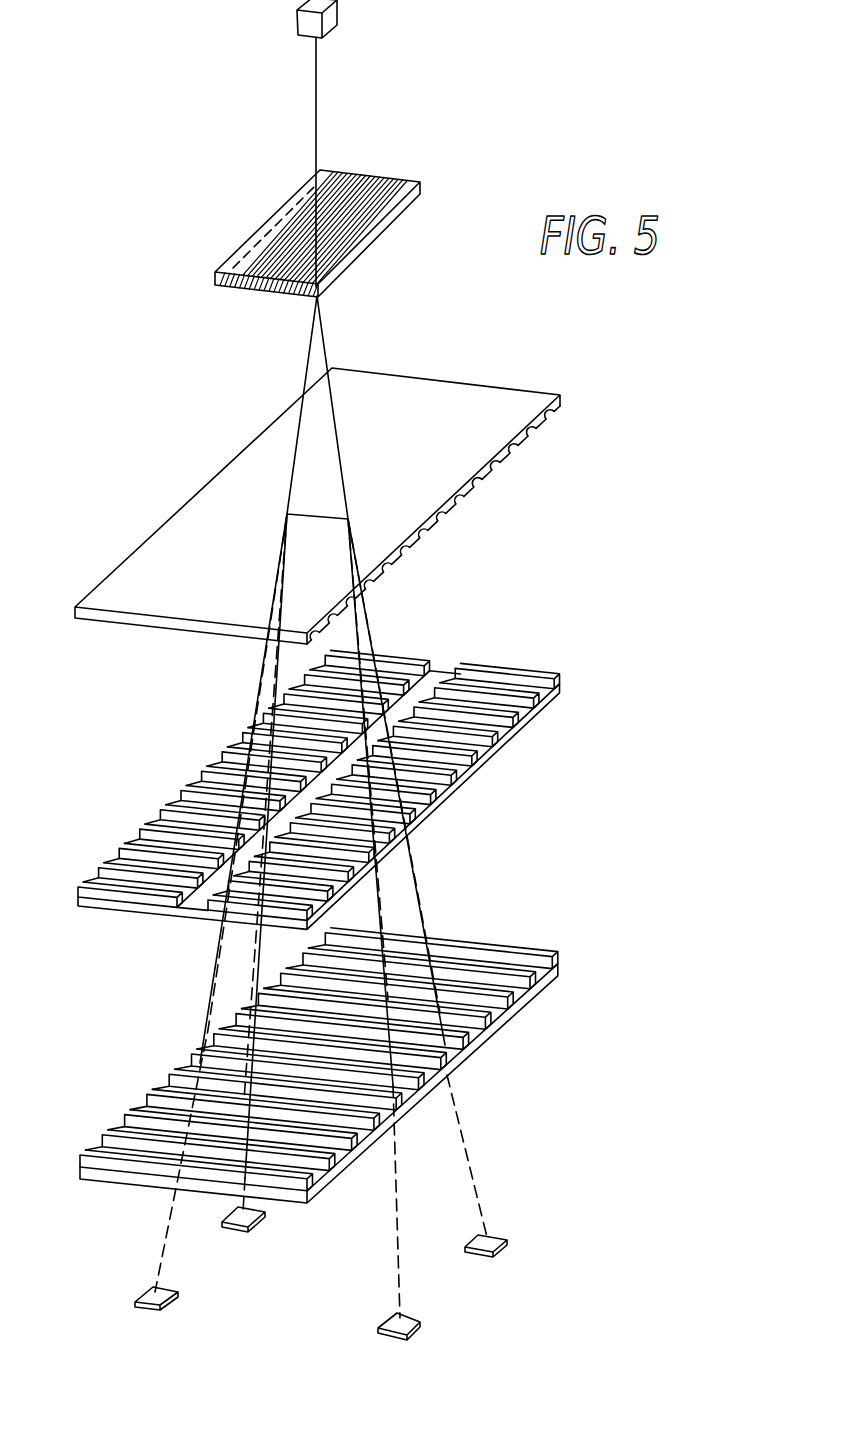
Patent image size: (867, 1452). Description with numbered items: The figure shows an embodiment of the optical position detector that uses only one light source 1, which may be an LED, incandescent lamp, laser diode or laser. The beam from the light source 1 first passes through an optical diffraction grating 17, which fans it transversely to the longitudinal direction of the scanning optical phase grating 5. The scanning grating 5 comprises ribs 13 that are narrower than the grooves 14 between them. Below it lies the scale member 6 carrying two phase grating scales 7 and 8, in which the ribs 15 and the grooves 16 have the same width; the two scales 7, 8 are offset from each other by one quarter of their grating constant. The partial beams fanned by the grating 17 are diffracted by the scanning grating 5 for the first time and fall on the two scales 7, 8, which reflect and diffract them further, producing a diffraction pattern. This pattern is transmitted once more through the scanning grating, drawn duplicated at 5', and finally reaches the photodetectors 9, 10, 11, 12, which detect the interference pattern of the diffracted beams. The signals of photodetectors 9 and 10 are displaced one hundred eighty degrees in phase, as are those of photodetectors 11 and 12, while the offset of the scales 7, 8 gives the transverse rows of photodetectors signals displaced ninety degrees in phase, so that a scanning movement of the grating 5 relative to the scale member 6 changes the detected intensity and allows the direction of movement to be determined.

The light source 1 is at (327, 17).
The optical diffraction grating 17 is at (282, 211).
The scanning optical phase grating 5 is at (354, 506).
The ribs 13 is at (483, 477).
The grooves 14 is at (417, 542).
The scale member 6 is at (301, 788).
The phase grating scale 7 is at (225, 820).
The phase grating scale 8 is at (503, 757).
The ribs 15 is at (125, 860).
The grooves 16 is at (197, 780).
The duplicated scanning grating 5' is at (346, 1065).
The photodetector 9 is at (258, 1227).
The photodetector 10 is at (150, 1297).
The photodetector 11 is at (500, 1238).
The photodetector 12 is at (410, 1320).